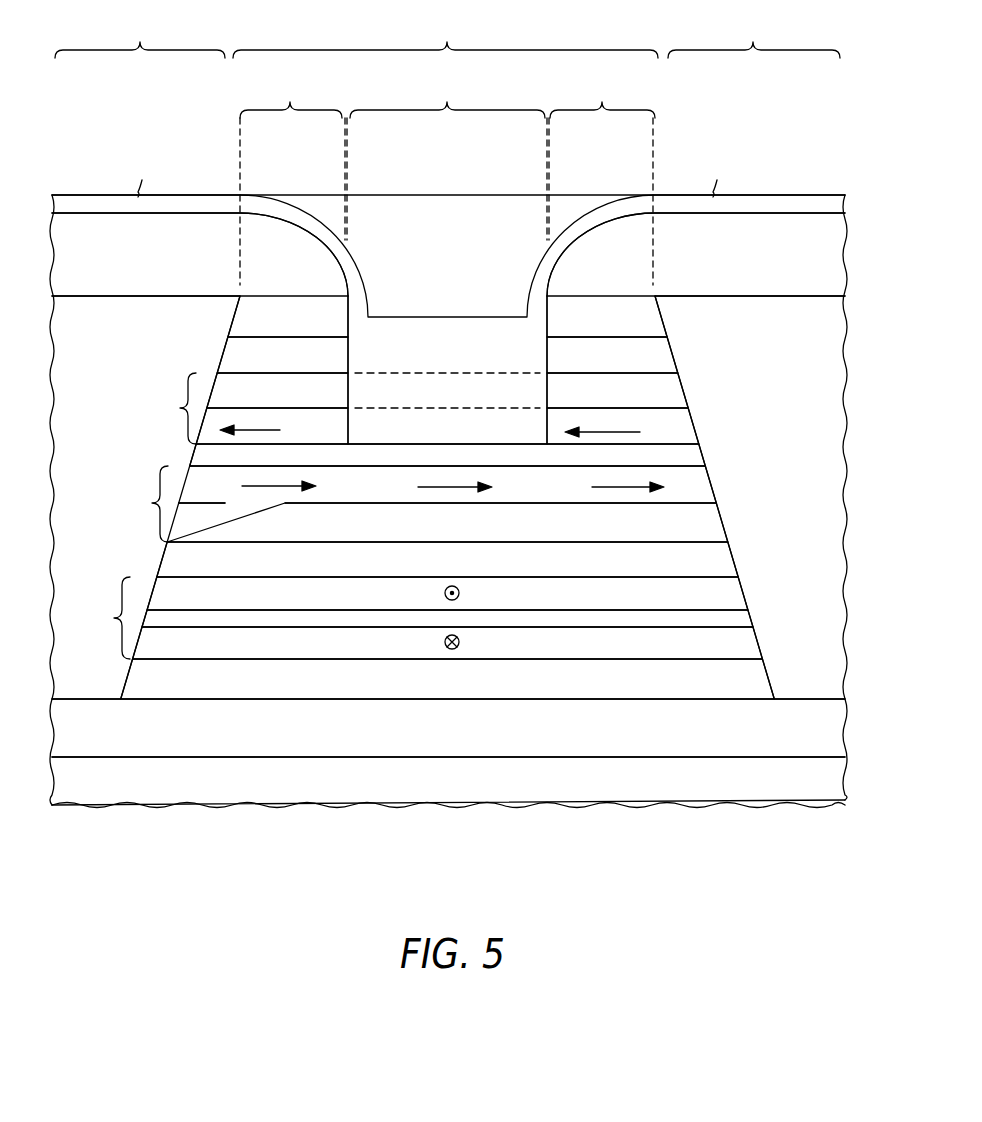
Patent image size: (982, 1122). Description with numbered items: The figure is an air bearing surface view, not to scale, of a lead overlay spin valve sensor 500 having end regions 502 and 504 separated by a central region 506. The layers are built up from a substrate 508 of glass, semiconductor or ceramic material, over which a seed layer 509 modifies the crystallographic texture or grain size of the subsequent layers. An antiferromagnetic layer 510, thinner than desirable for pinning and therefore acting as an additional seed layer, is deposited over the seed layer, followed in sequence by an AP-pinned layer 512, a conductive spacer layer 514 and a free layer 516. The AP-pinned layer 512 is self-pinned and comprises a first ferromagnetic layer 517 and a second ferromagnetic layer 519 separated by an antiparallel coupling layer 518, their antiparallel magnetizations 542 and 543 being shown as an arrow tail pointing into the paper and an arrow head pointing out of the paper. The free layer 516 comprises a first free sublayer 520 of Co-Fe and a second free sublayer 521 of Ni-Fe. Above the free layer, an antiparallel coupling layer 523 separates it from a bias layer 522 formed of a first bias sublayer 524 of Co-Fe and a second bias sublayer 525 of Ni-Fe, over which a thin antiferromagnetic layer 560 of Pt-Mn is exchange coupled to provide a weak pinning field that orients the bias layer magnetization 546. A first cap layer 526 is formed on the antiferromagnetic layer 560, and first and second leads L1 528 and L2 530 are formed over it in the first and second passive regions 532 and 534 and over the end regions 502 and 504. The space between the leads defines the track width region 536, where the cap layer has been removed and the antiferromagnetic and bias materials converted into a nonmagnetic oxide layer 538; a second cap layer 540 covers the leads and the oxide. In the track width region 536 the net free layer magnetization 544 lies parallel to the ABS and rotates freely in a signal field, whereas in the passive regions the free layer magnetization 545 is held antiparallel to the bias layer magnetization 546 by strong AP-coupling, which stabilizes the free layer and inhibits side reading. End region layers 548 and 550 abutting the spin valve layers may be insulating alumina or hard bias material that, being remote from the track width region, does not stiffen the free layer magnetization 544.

The lead overlay spin valve sensor 500 is at (635, 850).
The end region 502 is at (140, 36).
The end region 504 is at (754, 36).
The central region 506 is at (445, 36).
The substrate 508 is at (470, 796).
The seed layer 509 is at (470, 746).
The antiferromagnetic layer 510 is at (766, 672).
The antiparallel-pinned layer 512 is at (104, 618).
The conductive spacer layer 514 is at (734, 562).
The free layer 516 is at (140, 504).
The first ferromagnetic layer 517 is at (757, 642).
The antiparallel coupling layer 518 is at (750, 618).
The second ferromagnetic layer 519 is at (743, 593).
The first free sublayer 520 is at (721, 520).
The second free sublayer 521 is at (710, 482).
The bias layer 522 is at (165, 408).
The antiparallel coupling layer 523 is at (702, 455).
The first bias sublayer 524 is at (694, 427).
The second bias sublayer 525 is at (683, 390).
The first cap layer 526 is at (662, 318).
The first lead 528 is at (110, 271).
The second lead 530 is at (807, 271).
The first passive region 532 is at (292, 179).
The second passive region 534 is at (602, 179).
The track width region 536 is at (447, 157).
The nonmagnetic oxide layer 538 is at (528, 440).
The second cap layer 540 is at (845, 204).
The magnetization of the FM1 layer 542 is at (460, 642).
The magnetization of the FM2 layer 543 is at (460, 593).
The magnetization of the free layer 544 is at (428, 489).
The magnetization of the free layer 545 is at (252, 488).
The magnetization of the bias layer 546 is at (280, 430).
The end region layer 548 is at (106, 453).
The end region layer 550 is at (816, 418).
The antiferromagnetic layer 560 is at (673, 355).